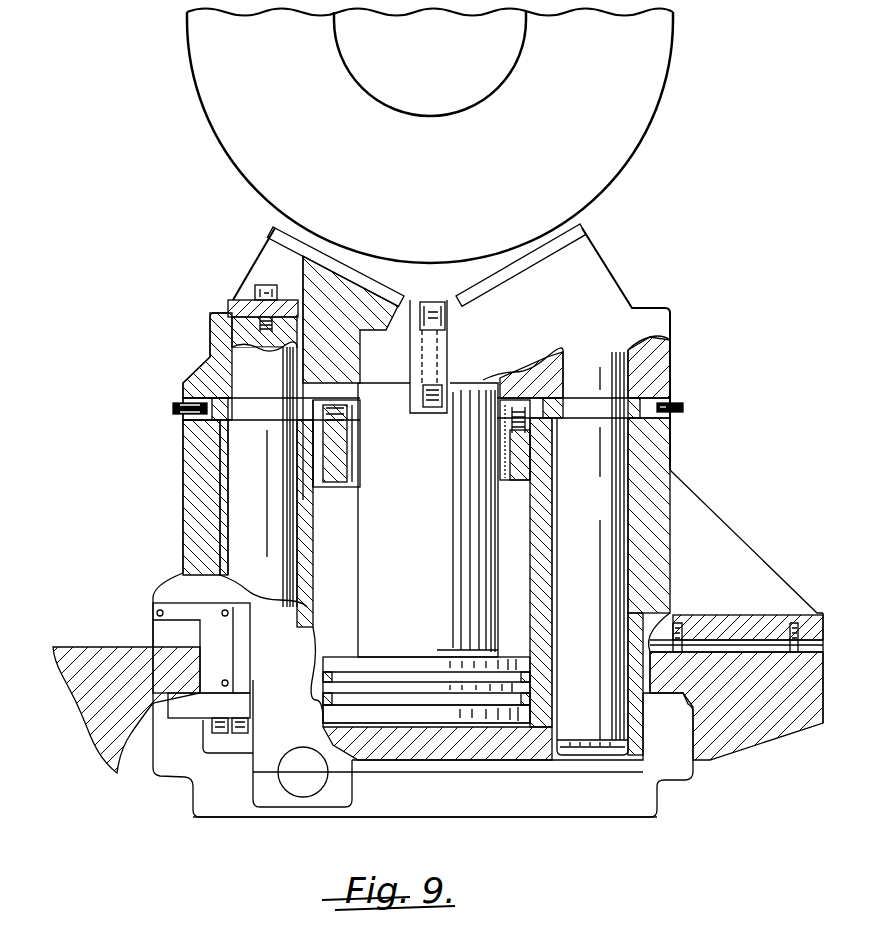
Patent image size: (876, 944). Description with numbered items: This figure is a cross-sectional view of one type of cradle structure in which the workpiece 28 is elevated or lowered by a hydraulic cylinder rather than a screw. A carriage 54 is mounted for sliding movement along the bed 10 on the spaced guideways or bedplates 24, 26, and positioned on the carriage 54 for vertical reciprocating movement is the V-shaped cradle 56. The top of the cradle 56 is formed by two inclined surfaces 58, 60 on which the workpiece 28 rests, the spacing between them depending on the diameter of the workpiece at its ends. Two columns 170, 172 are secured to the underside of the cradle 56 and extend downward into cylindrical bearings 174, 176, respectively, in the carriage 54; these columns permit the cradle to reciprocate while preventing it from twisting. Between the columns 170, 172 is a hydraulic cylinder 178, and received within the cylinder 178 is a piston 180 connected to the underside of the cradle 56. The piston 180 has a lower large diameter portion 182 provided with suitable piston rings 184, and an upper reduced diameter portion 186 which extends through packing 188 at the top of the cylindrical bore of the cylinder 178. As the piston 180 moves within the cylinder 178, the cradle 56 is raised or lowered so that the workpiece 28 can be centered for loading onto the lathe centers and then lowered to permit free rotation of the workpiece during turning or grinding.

The bed 10 is at (178, 798).
The guideway 24 is at (750, 643).
The guideway 26 is at (128, 635).
The workpiece 28 is at (650, 88).
The carriage 54 is at (193, 555).
The cradle 56 is at (590, 270).
The inclined surface 58 is at (338, 258).
The inclined surface 60 is at (527, 253).
The column 170 is at (238, 502).
The column 172 is at (615, 528).
The cylindrical bearing 174 is at (222, 457).
The cylindrical bearing 176 is at (632, 470).
The hydraulic cylinder 178 is at (520, 580).
The piston 180 is at (453, 627).
The lower large diameter portion 182 is at (432, 713).
The piston rings 184 is at (320, 697).
The upper reduced diameter portion 186 is at (367, 608).
The packing 188 is at (360, 452).